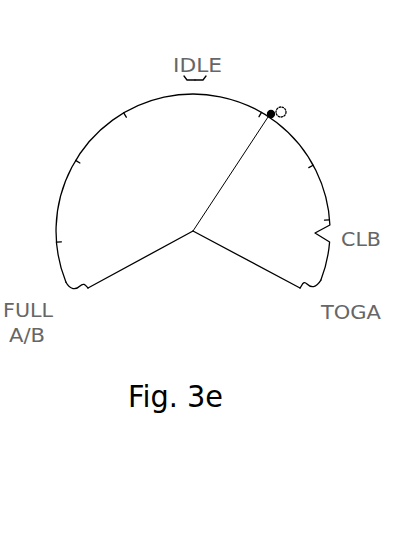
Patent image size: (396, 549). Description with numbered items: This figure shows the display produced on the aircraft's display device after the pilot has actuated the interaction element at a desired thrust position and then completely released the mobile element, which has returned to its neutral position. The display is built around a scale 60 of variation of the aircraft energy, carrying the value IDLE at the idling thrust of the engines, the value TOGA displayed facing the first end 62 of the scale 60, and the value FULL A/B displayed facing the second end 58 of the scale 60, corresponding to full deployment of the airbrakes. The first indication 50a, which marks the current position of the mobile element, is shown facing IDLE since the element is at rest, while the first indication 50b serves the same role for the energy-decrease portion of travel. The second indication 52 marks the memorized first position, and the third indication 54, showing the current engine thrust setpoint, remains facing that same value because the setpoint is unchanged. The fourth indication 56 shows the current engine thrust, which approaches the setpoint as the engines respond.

The first indication 50a is at (185, 77).
The first indication 50b is at (205, 78).
The second indication 52 is at (271, 111).
The third indication 54 is at (286, 114).
The fourth indication 56 is at (222, 190).
The second end of the scale 58 is at (88, 289).
The scale 60 is at (100, 130).
The first end of the scale 62 is at (300, 289).